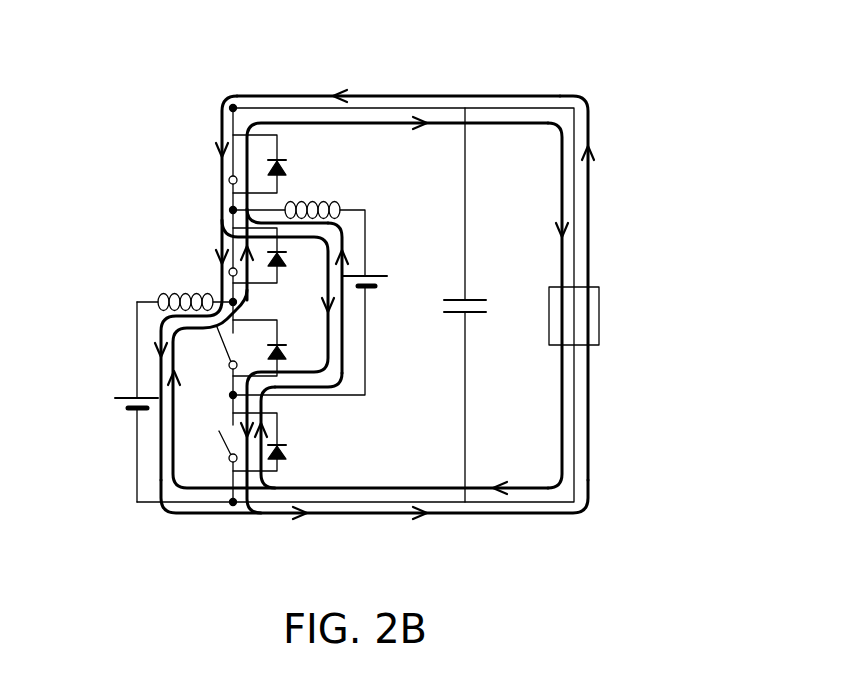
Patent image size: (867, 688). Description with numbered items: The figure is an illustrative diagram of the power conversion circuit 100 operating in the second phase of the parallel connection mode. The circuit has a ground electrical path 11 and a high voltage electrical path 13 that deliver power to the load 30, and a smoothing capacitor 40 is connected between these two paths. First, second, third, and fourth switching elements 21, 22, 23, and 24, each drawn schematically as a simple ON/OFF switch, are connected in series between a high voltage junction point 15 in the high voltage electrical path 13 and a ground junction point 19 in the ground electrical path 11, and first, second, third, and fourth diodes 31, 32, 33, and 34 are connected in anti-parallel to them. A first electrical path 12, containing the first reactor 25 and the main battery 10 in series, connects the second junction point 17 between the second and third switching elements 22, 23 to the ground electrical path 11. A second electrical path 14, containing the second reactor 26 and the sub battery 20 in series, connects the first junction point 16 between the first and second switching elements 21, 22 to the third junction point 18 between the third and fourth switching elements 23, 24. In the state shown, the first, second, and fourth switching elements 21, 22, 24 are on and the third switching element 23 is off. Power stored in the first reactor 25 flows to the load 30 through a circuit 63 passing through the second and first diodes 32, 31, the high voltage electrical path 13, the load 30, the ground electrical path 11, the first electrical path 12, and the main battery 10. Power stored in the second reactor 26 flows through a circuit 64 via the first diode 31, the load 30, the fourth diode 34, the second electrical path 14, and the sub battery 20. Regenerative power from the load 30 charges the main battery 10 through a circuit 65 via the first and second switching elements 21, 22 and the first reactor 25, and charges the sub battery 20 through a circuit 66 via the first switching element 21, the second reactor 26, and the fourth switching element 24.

The main battery 10 is at (122, 405).
The ground electrical path 11 is at (333, 503).
The first electrical path 12 is at (137, 362).
The high voltage electrical path 13 is at (390, 110).
The second electrical path 14 is at (365, 365).
The high voltage junction point 15 is at (226, 104).
The first junction point 16 is at (230, 210).
The second junction point 17 is at (240, 302).
The third junction point 18 is at (230, 400).
The ground junction point 19 is at (233, 503).
The sub battery 20 is at (382, 283).
The first switching element 21 is at (233, 165).
The second switching element 22 is at (230, 247).
The third switching element 23 is at (222, 337).
The fourth switching element 24 is at (228, 455).
The first reactor 25 is at (173, 293).
The second reactor 26 is at (330, 200).
The load 30 is at (602, 297).
The first diode 31 is at (287, 166).
The second diode 32 is at (287, 259).
The third diode 33 is at (287, 353).
The fourth diode 34 is at (287, 455).
The smoothing capacitor 40 is at (477, 296).
The circuit 63 is at (564, 182).
The circuit 64 is at (343, 322).
The circuit 65 is at (538, 96).
The circuit 66 is at (318, 375).
The power conversion circuit 100 is at (636, 103).